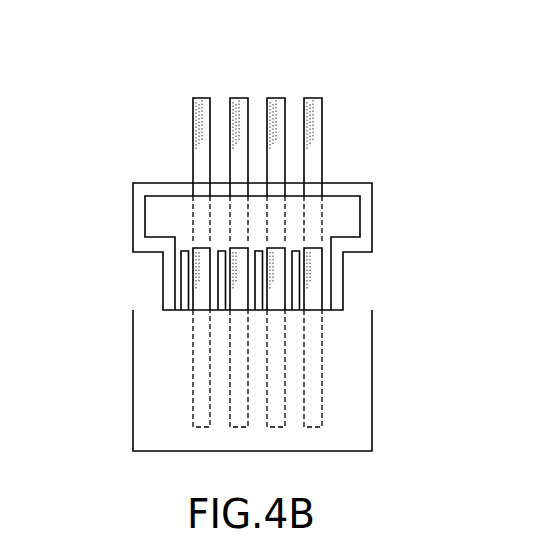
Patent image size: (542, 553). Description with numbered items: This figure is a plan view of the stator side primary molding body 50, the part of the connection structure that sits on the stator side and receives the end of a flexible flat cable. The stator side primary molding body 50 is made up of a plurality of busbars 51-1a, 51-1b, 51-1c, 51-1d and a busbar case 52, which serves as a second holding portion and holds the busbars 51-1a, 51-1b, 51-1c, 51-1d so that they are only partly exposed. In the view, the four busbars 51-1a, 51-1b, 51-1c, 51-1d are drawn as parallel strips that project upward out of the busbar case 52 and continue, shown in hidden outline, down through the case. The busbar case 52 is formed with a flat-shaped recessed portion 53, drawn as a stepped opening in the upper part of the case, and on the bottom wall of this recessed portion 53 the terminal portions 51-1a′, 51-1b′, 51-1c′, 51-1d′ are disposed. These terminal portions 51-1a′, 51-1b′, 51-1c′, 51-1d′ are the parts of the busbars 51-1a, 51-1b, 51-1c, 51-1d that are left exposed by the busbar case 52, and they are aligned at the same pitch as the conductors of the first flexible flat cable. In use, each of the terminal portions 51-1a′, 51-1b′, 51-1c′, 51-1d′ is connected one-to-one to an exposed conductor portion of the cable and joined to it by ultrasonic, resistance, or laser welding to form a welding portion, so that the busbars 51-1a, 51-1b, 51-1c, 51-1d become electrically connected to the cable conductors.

The stator side primary molding body 50 is at (366, 156).
The busbar case 52 is at (353, 378).
The recessed portion 53 is at (173, 211).
The busbar 51-1a is at (202, 110).
The busbar 51-1b is at (240, 110).
The busbar 51-1c is at (278, 107).
The busbar 51-1d is at (308, 107).
The terminal portion 51-1a′ is at (200, 264).
The terminal portion 51-1b′ is at (240, 295).
The terminal portion 51-1c′ is at (277, 277).
The terminal portion 51-1d′ is at (315, 290).